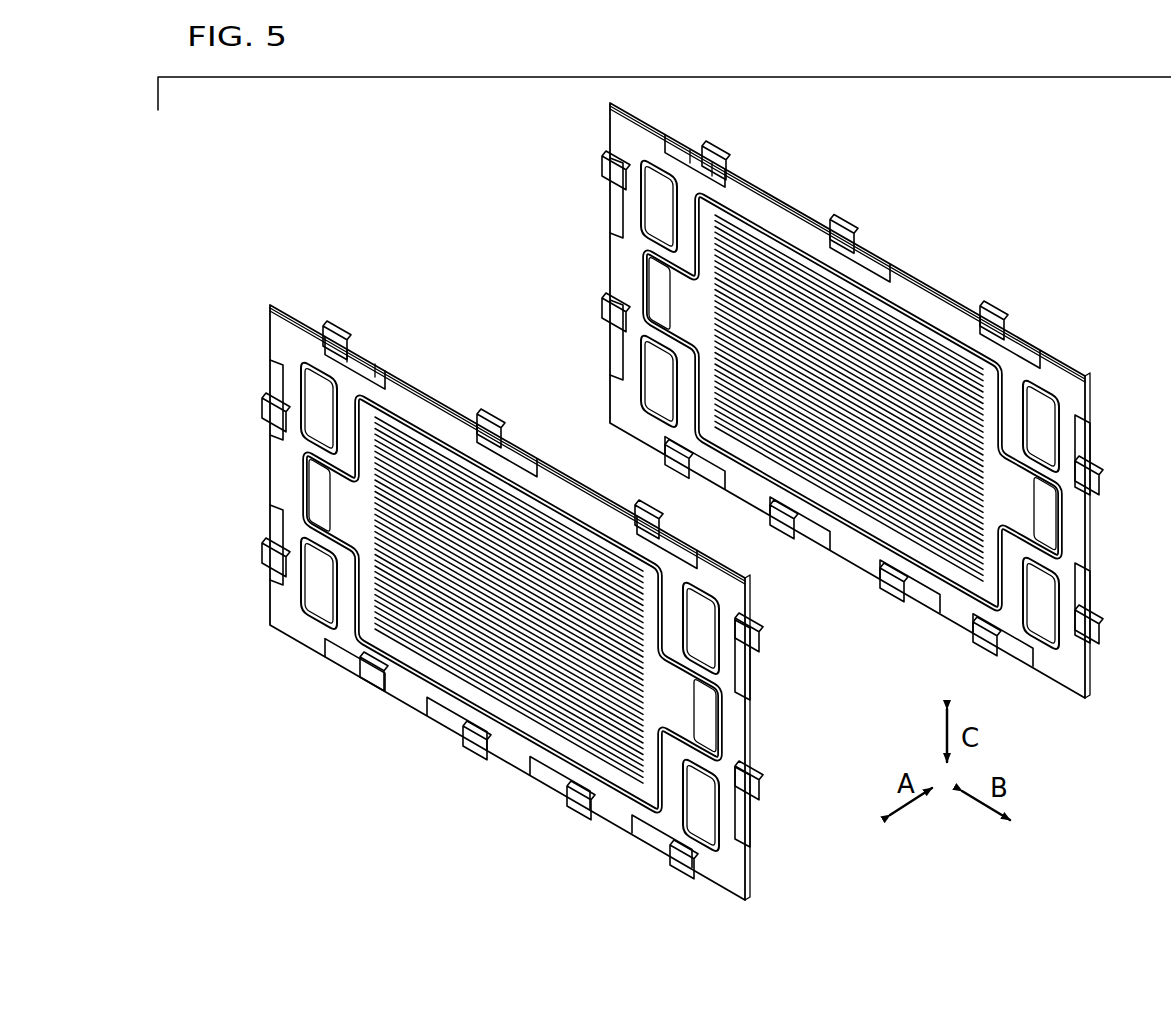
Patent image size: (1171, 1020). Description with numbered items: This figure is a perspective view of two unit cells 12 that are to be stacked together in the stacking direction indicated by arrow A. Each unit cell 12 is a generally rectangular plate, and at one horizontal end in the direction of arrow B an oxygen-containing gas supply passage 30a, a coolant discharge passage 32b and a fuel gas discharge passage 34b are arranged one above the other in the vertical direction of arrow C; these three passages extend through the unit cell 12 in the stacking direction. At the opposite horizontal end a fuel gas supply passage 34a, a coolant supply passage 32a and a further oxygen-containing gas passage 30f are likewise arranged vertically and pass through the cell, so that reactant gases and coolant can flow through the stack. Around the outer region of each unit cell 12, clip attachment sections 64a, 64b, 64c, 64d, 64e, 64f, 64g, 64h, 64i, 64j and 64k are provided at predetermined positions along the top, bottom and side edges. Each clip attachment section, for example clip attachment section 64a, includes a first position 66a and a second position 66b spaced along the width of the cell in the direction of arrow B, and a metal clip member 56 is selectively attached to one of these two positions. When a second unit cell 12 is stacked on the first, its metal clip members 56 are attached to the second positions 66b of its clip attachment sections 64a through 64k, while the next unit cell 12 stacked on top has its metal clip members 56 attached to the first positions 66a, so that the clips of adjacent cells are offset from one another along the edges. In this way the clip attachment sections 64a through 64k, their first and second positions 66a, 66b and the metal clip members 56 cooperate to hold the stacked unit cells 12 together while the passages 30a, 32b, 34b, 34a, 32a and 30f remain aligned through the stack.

The unit cell 12 is at (270, 300).
The oxygen-containing gas supply passage 30a is at (320, 393).
The coolant discharge passage 32b is at (318, 490).
The fuel gas discharge passage 34b is at (318, 557).
The fuel gas supply passage 34a is at (705, 642).
The coolant supply passage 32a is at (705, 742).
The oxygen-containing gas discharge passage 30f is at (717, 827).
The metal clip member 56 is at (340, 340).
The clip attachment section 64a is at (375, 315).
The clip attachment section 64b is at (531, 442).
The clip attachment section 64c is at (694, 537).
The clip attachment section 64d is at (758, 681).
The clip attachment section 64e is at (759, 844).
The clip attachment section 64f is at (651, 855).
The clip attachment section 64g is at (557, 802).
The clip attachment section 64h is at (447, 735).
The clip attachment section 64i is at (345, 679).
The clip attachment section 64j is at (266, 517).
The clip attachment section 64k is at (266, 366).
The first position 66a is at (348, 335).
The second position 66b is at (376, 372).